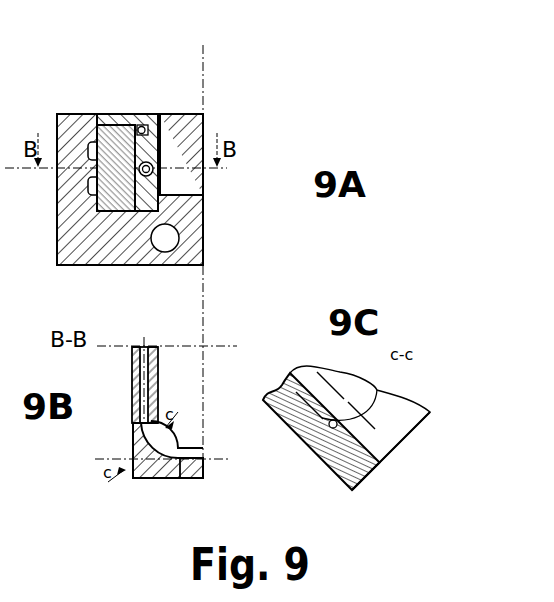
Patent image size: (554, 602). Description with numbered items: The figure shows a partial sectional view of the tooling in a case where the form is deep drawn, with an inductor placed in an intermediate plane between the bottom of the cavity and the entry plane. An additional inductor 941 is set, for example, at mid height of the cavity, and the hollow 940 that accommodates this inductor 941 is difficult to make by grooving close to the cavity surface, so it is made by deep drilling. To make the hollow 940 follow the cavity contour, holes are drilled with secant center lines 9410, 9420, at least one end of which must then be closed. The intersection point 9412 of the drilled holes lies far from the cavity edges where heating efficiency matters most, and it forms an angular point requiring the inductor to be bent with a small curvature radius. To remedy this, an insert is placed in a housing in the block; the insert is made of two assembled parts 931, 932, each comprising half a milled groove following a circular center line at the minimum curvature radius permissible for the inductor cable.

The first assembled part 931 is at (303, 440).
The second assembled part 932 is at (318, 457).
The hollow 940 is at (150, 178).
The additional inductor 941 is at (139, 126).
The drilled hole center line 9410 is at (143, 343).
The intersection point 9412 is at (147, 478).
The drilled hole center line 9420 is at (217, 458).